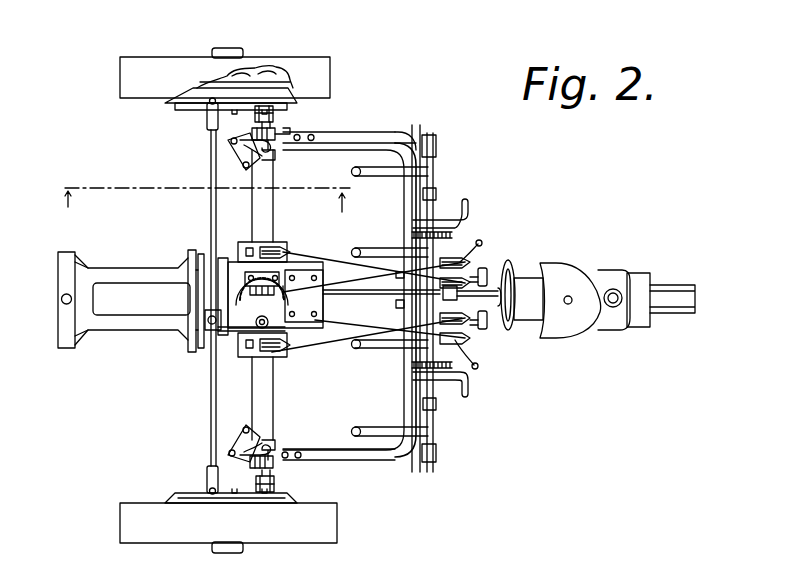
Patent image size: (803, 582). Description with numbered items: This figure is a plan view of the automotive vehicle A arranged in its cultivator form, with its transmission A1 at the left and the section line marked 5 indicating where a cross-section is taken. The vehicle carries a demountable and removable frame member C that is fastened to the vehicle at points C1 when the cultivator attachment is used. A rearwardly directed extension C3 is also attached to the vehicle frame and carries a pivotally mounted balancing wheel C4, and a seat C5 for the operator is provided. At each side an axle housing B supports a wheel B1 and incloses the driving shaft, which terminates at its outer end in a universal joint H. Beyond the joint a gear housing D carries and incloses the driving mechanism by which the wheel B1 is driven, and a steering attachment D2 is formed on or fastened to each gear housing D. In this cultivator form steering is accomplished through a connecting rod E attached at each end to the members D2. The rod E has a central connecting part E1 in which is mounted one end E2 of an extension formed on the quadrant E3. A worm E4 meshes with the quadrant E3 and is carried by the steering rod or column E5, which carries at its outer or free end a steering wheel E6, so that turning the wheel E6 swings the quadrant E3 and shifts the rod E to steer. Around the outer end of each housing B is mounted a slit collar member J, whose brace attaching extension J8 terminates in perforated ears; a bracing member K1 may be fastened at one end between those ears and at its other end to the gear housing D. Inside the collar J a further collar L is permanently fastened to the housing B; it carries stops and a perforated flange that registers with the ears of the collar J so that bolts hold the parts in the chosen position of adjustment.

The section line 5- 5 is at (204, 194).
The wheel B1 is at (128, 75).
The gear housing D is at (240, 85).
The steering attachment D2 is at (220, 106).
The connecting rod E is at (210, 402).
The universal joint H is at (267, 103).
The collar member J is at (279, 134).
The brace attaching extension J8 is at (246, 139).
The bracing member K1 is at (234, 163).
The collar L is at (273, 160).
The housing B is at (266, 204).
The fastening point C1 is at (288, 134).
The frame member C is at (373, 143).
The automotive vehicle A is at (116, 292).
The transmission A1 is at (235, 277).
The extension end E2 is at (230, 318).
The central connecting part E1 is at (205, 321).
The worm E4 is at (265, 280).
The quadrant E3 is at (272, 316).
The steering rod E5 is at (382, 292).
The steering wheel E6 is at (510, 265).
The rearwardly directed extension C3 is at (527, 283).
The seat C5 is at (582, 281).
The balancing wheel C4 is at (668, 290).